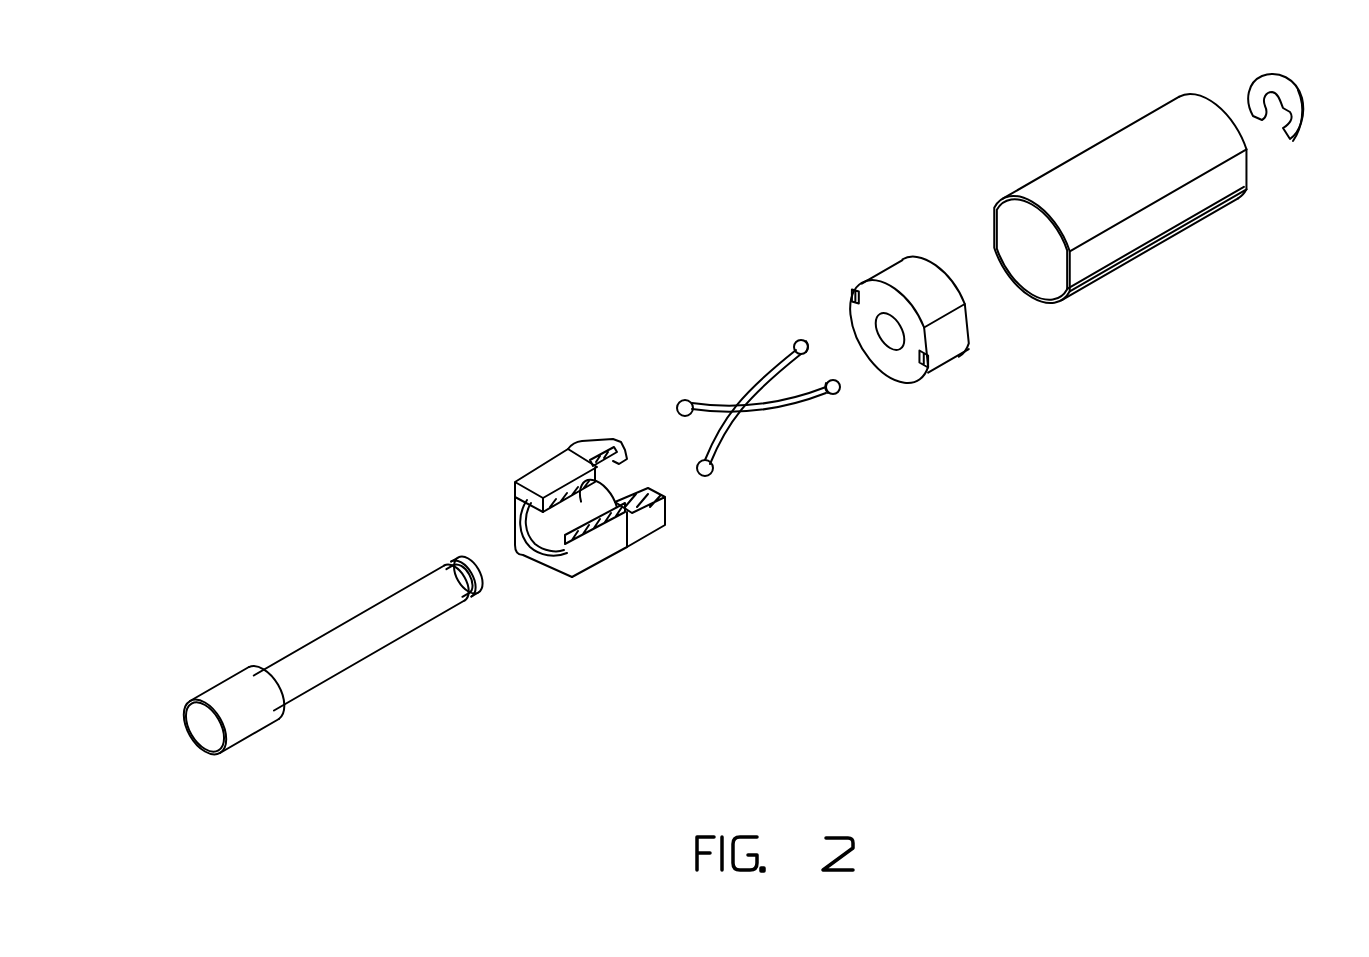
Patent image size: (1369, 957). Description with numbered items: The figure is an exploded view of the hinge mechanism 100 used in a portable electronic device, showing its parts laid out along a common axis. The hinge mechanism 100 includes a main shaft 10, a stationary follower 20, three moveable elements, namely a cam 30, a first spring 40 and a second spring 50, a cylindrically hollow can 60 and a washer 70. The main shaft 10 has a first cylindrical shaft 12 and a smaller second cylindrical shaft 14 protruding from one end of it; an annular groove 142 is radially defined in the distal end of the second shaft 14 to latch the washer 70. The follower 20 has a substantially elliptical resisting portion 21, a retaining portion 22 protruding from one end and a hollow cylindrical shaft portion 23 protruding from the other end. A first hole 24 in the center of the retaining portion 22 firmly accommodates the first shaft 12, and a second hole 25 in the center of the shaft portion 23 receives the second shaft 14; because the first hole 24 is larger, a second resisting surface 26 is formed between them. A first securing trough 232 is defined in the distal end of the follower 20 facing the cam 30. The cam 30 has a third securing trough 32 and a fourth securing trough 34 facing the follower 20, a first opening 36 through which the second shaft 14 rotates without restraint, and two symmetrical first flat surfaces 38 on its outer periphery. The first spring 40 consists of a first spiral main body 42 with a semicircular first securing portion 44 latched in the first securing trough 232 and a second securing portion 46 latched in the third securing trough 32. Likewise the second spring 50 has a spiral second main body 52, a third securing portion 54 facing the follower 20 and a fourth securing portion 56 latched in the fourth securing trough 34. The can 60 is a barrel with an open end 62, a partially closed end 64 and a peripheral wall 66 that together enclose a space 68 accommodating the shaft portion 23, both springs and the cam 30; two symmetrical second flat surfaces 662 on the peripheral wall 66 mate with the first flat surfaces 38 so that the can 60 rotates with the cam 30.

The hinge mechanism 100 is at (583, 122).
The main shaft 10 is at (300, 595).
The first cylindrical shaft 12 is at (263, 713).
The second cylindrical shaft 14 is at (337, 657).
The annular groove 142 is at (474, 598).
The follower 20 is at (508, 444).
The resisting portion 21 is at (630, 537).
The retaining portion 22 is at (590, 563).
The shaft portion 23 is at (650, 520).
The first securing trough 232 is at (622, 445).
The first hole 24 is at (537, 512).
The second hole 25 is at (610, 490).
The second resisting surface 26 is at (545, 555).
The cam 30 is at (855, 235).
The third securing trough 32 is at (915, 353).
The fourth securing trough 34 is at (858, 306).
The first opening 36 is at (893, 337).
The first flat surfaces 38 is at (950, 347).
The first spring 40 is at (877, 488).
The first spiral main body 42 is at (762, 407).
The first securing portion 44 is at (722, 457).
The second securing portion 46 is at (834, 395).
The second spring 50 is at (738, 276).
The second main body 52 is at (740, 396).
The third securing portion 54 is at (700, 462).
The fourth securing portion 56 is at (795, 341).
The can 60 is at (1035, 139).
The open end 62 is at (1053, 301).
The partially closed end 64 is at (1217, 100).
The peripheral wall 66 is at (1140, 143).
The second flat surfaces 662 is at (1150, 227).
The space 68 is at (1040, 253).
The washer 70 is at (1273, 85).